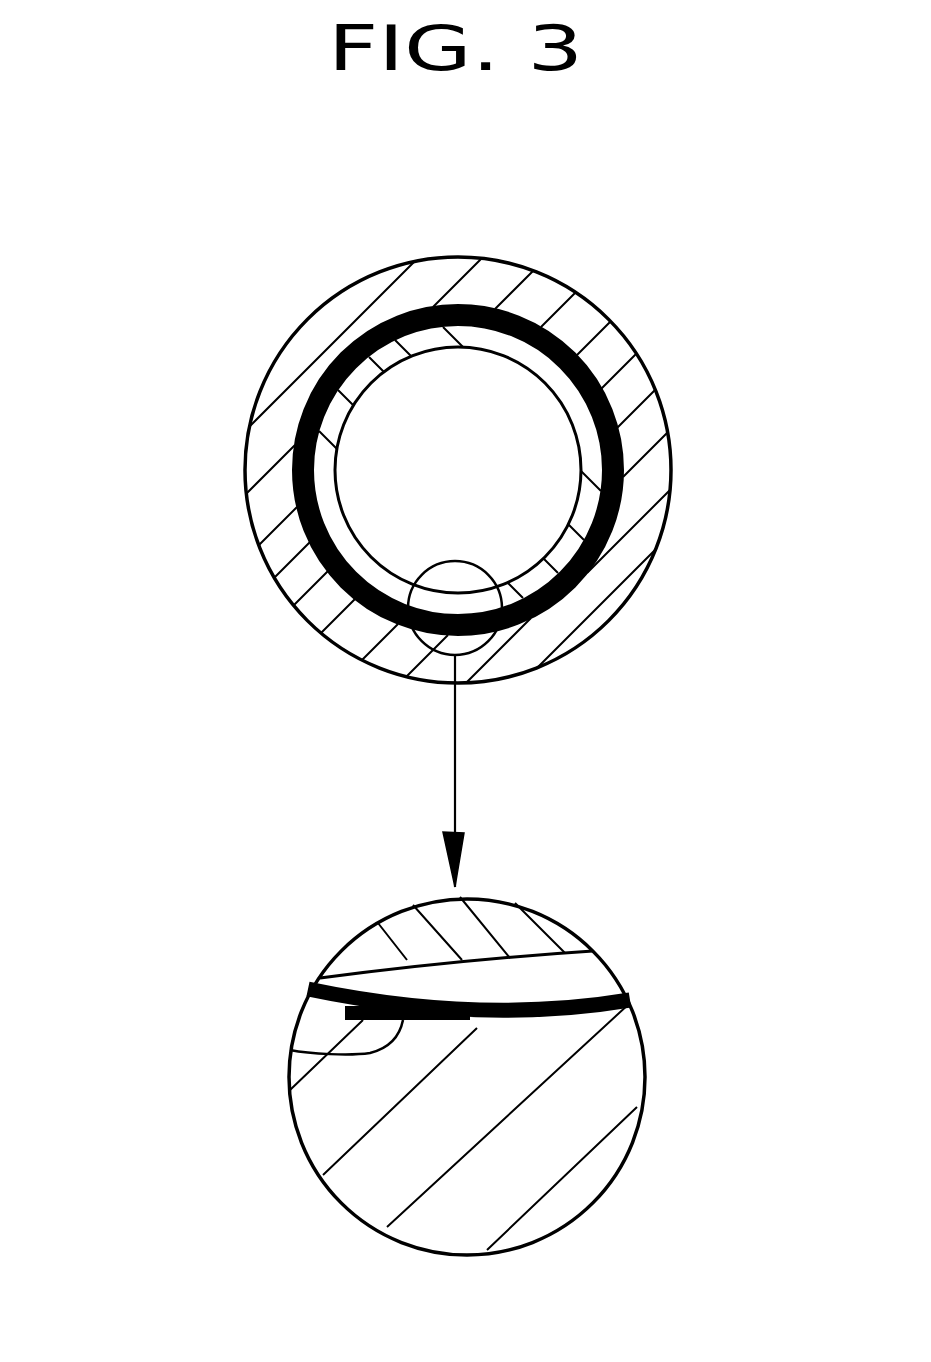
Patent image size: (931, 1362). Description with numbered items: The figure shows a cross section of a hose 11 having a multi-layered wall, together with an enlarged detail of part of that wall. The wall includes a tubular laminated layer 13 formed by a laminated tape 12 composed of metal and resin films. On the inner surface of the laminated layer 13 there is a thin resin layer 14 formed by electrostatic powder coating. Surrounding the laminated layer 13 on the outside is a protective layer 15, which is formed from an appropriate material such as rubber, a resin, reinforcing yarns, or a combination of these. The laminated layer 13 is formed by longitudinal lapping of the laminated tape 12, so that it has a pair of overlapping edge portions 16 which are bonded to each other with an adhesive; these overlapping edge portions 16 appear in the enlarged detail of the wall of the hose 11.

The hose 11 is at (260, 586).
The laminated tape 12 is at (550, 1023).
The laminated layer 13 is at (663, 505).
The resin layer 14 is at (556, 393).
The protective layer 15 is at (615, 570).
The overlapping edge portions 16 is at (355, 1025).